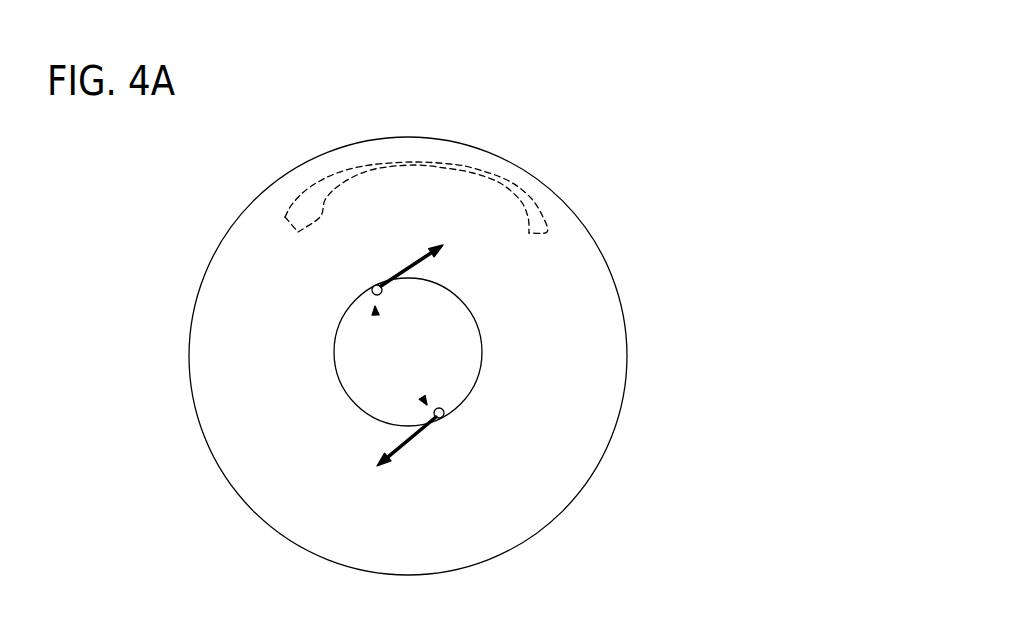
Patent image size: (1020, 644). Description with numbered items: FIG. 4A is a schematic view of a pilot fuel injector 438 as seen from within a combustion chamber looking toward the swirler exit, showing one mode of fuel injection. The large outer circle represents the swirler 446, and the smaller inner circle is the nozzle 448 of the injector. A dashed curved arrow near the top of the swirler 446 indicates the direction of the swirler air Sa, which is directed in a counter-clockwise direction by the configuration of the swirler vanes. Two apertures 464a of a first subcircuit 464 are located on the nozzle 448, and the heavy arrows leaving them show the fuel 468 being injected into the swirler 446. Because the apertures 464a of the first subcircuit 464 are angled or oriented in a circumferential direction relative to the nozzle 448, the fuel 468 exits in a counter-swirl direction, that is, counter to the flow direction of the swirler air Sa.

The pilot fuel injector 438 is at (507, 87).
The swirler 446 is at (625, 318).
The nozzle 448 is at (357, 365).
The first subcircuit 464 is at (376, 315).
The apertures 464a is at (373, 288).
The fuel 468 is at (412, 266).
The swirler air Sa is at (318, 210).